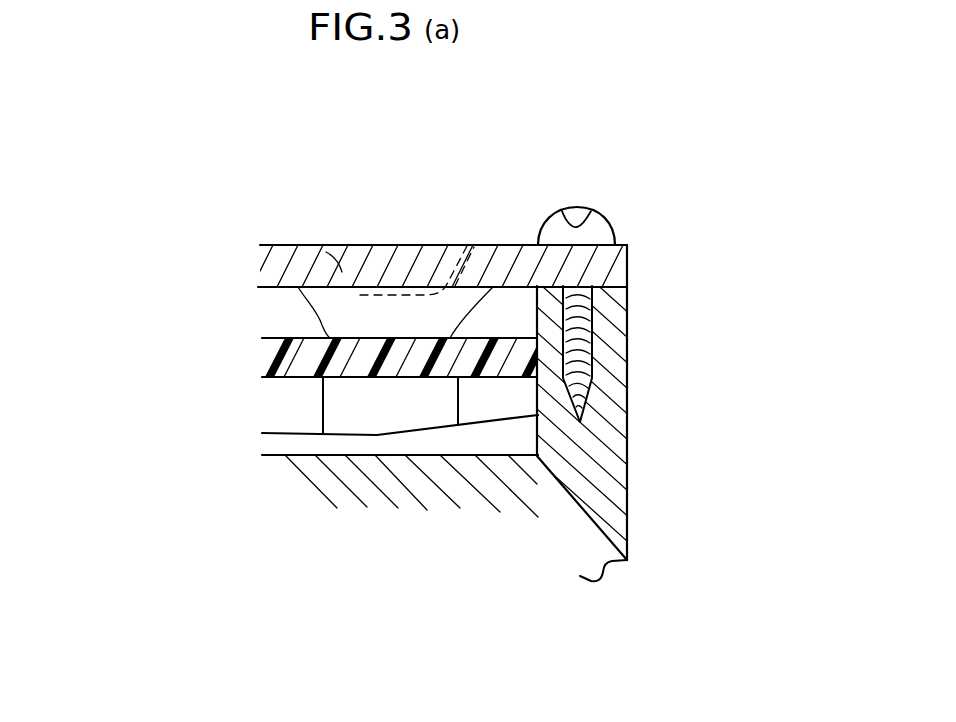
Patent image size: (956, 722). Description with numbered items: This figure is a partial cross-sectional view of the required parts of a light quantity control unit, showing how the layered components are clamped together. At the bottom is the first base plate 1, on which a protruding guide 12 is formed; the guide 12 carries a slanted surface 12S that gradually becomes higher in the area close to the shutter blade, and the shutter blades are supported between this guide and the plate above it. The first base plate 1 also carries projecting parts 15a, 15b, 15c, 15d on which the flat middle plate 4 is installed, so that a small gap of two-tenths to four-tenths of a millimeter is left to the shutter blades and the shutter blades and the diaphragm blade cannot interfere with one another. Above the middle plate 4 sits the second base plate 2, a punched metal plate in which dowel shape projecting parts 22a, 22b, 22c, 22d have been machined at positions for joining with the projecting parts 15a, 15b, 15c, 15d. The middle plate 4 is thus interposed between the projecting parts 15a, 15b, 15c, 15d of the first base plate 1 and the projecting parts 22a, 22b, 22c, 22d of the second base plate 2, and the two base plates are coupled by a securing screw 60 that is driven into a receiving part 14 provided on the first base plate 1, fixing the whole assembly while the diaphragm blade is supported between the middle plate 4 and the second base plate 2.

The first base plate 1 is at (632, 483).
The second base plate 2 is at (290, 243).
The middle plate 4 is at (297, 368).
The guide 12 is at (290, 445).
The slanted surface 12S is at (497, 438).
The receiving part 14 is at (613, 348).
The projecting part 15a is at (396, 517).
The projecting part 15b is at (396, 517).
The projecting part 15c is at (380, 415).
The projecting part 15d is at (396, 517).
The dowel shape projecting part 22a is at (295, 338).
The dowel shape projecting part 22b is at (295, 338).
The dowel shape projecting part 22c is at (295, 338).
The dowel shape projecting part 22d is at (327, 308).
The securing screw 60 is at (602, 208).